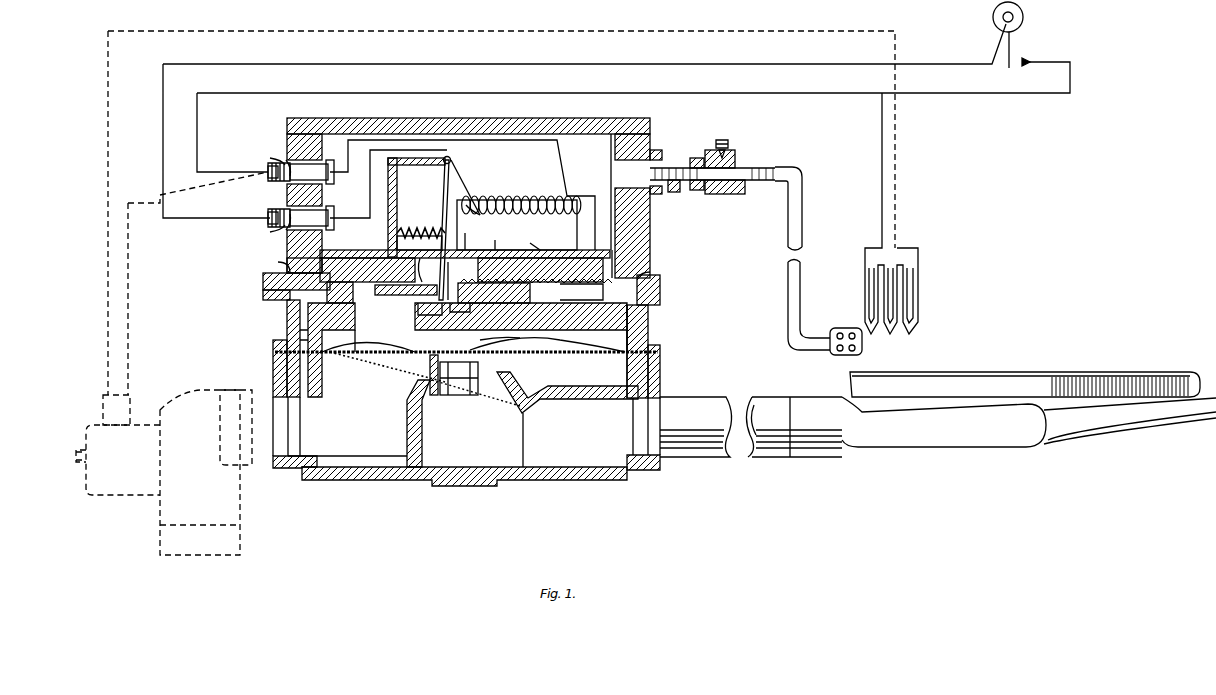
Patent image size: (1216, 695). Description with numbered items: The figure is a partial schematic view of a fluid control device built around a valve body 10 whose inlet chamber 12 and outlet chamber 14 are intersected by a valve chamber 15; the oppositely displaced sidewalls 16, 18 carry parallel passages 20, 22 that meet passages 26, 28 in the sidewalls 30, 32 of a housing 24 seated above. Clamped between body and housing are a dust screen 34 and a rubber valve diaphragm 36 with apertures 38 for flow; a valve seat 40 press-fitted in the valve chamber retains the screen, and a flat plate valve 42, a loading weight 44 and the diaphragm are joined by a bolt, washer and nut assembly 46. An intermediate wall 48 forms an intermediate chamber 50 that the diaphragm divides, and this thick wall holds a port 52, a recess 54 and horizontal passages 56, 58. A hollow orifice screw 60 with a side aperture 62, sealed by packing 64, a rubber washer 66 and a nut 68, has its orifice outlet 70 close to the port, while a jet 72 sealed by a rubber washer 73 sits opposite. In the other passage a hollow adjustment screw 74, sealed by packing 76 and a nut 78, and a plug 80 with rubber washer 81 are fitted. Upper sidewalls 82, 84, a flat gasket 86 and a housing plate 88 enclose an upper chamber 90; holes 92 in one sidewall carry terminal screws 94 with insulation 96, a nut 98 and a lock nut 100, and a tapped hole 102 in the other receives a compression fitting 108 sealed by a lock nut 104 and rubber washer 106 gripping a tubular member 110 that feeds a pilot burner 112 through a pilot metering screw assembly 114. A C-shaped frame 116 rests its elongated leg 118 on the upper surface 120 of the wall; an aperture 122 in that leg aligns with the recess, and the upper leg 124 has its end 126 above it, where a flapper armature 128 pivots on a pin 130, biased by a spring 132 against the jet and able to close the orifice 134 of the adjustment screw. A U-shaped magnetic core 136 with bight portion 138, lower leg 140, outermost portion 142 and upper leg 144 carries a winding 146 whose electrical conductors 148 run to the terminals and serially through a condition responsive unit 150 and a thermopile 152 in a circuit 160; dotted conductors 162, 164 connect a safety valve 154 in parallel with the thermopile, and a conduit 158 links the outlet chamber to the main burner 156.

The valve body 10 is at (548, 480).
The inlet chamber 12 is at (347, 436).
The outlet chamber 14 is at (557, 440).
The valve chamber 15 is at (440, 423).
The sidewall 16 is at (284, 378).
The sidewall 18 is at (660, 374).
The passage 20 is at (310, 382).
The passage 22 is at (585, 374).
The housing 24 is at (568, 267).
The passage 26 is at (300, 334).
The passage 28 is at (648, 328).
The sidewall 30 is at (290, 322).
The sidewall 32 is at (648, 318).
The dust screen 34 is at (372, 382).
The valve diaphragm 36 is at (378, 337).
The apertures 38 is at (275, 352).
The valve seat 40 is at (436, 395).
The flat plate valve 42 is at (510, 368).
The loading weight 44 is at (507, 338).
The bolt, washer and nut assembly 46 is at (466, 395).
The intermediate wall 48 is at (410, 333).
The intermediate chamber 50 is at (491, 341).
The port 52 is at (350, 333).
The recess 54 is at (455, 281).
The horizontal passage 56 is at (396, 299).
The horizontal passage 58 is at (581, 293).
The hollow orifice screw 60 is at (287, 256).
The side aperture 62 is at (266, 295).
The packing 64 is at (360, 266).
The rubber washer 66 is at (265, 265).
The nut 68 is at (266, 282).
The orifice outlet 70 is at (380, 266).
The jet 72 is at (431, 309).
The rubber washer 73 is at (428, 270).
The hollow adjustment screw 74 is at (500, 283).
The packing 76 is at (498, 330).
The nut 78 is at (462, 283).
The plug 80 is at (660, 288).
The rubber washer 81 is at (660, 272).
The sidewall 82 is at (282, 190).
The sidewall 84 is at (640, 218).
The flat gasket 86 is at (652, 140).
The housing plate 88 is at (640, 118).
The upper chamber 90 is at (596, 192).
The holes 92 is at (322, 148).
The terminal screw 94 is at (292, 124).
The insulation 96 is at (288, 142).
The nut 98 is at (267, 194).
The lock nut 100 is at (268, 160).
The tapped hole 102 is at (652, 188).
The lock nut 104 is at (678, 192).
The rubber washer 106 is at (663, 150).
The compression fitting 108 is at (688, 158).
The tubular member 110 is at (735, 185).
The pilot burner 112 is at (848, 328).
The pilot metering screw assembly 114 is at (732, 167).
The C-shaped frame 116 is at (397, 191).
The elongated leg 118 is at (530, 250).
The upper surface 120 is at (640, 242).
The aperture 122 is at (428, 250).
The upper leg 124 is at (400, 165).
The end 126 is at (452, 156).
The flapper armature 128 is at (443, 221).
The pin 130 is at (462, 172).
The spring 132 is at (408, 230).
The orifice 134 is at (464, 309).
The magnetic core 136 is at (517, 225).
The bight portion 138 is at (589, 208).
The lower leg 140 is at (502, 235).
The outermost portion 142 is at (472, 235).
The upper leg 144 is at (498, 200).
The winding 146 is at (531, 200).
The electrical conductors 148 is at (468, 185).
The condition responsive unit 150 is at (1021, 35).
The thermopile 152 is at (903, 213).
The safety valve 154 is at (236, 518).
The main burner 156 is at (1029, 396).
The conduit 158 is at (700, 457).
The circuit 160 is at (616, 121).
The conductor 162 is at (108, 47).
The conductor 164 is at (160, 198).